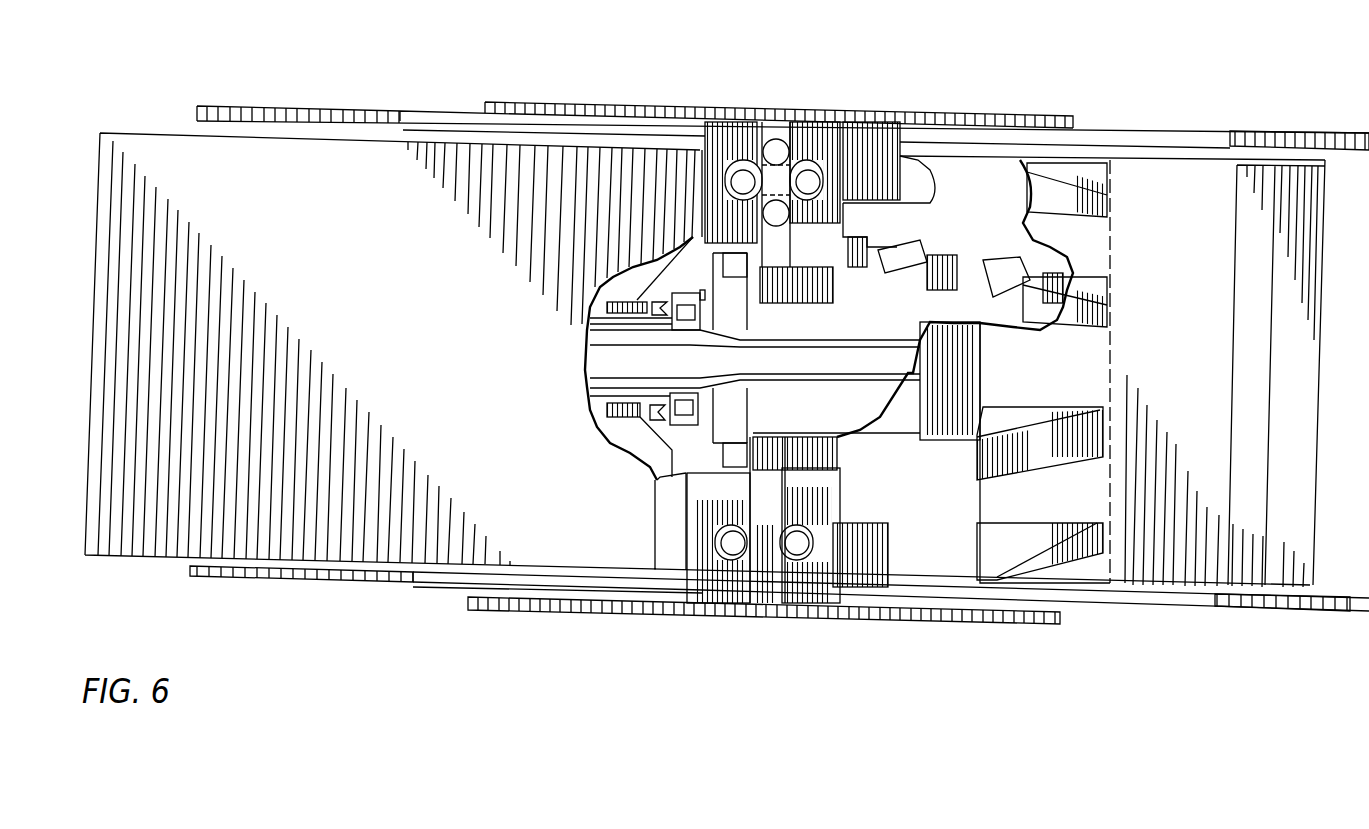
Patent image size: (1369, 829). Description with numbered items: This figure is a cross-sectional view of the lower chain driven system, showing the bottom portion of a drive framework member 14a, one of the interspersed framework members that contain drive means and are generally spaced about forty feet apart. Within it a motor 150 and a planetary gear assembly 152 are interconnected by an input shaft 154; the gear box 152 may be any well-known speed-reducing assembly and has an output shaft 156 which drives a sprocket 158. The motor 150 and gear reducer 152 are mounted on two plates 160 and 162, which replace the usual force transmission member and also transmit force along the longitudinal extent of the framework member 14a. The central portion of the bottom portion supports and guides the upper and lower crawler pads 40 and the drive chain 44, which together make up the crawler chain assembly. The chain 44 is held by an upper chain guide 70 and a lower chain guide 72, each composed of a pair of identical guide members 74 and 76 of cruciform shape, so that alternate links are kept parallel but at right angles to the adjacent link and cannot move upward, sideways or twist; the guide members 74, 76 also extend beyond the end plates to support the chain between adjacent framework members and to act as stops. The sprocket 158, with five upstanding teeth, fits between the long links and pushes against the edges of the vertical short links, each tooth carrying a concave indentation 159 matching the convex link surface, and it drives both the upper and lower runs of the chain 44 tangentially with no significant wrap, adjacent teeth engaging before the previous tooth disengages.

The drive framework member 14a is at (400, 92).
The crawler pads 40 is at (1057, 115).
The drive chain 44 is at (779, 150).
The upper chain guide 70 is at (772, 115).
The lower chain guide 72 is at (731, 610).
The guide member 74 is at (813, 130).
The guide member 76 is at (723, 137).
The motor 150 is at (382, 366).
The planetary gear assembly 152 is at (1135, 186).
The input shaft 154 is at (897, 360).
The output shaft 156 is at (855, 412).
The drive sprocket 158 is at (755, 593).
The concave indentation 159 is at (765, 597).
The plate 160 is at (722, 337).
The plate 162 is at (878, 160).